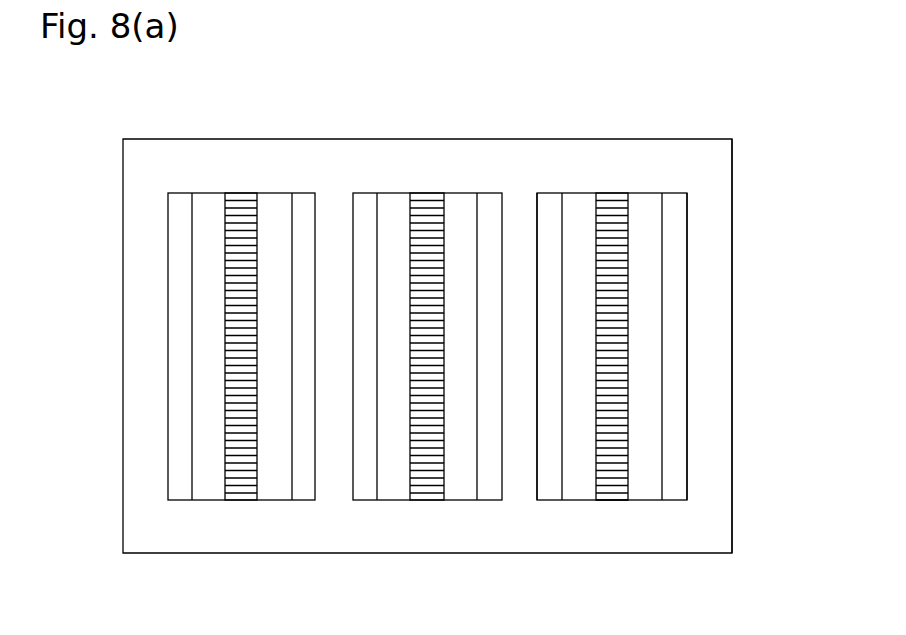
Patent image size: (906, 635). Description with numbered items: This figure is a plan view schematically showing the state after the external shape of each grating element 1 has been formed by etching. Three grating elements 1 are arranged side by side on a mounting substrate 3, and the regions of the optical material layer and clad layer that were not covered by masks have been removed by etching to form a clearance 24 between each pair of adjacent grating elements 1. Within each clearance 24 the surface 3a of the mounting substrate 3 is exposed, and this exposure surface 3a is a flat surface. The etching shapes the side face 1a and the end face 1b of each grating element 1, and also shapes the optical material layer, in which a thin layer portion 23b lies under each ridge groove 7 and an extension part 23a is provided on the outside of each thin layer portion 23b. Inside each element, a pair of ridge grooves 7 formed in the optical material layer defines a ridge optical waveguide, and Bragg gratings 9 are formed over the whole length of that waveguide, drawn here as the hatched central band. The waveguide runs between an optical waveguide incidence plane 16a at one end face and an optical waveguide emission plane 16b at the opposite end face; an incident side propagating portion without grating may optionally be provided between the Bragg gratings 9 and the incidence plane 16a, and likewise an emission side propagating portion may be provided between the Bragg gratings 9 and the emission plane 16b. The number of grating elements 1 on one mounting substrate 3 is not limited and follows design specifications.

The grating element 1 is at (638, 352).
The side face 1a is at (691, 222).
The end face 1b is at (580, 205).
The mounting substrate 3 is at (713, 358).
The surface of the mounting substrate 3a is at (713, 268).
The ridge groove 7 is at (207, 205).
The Bragg grating 9 is at (243, 203).
The optical waveguide incidence plane 16a is at (612, 205).
The optical waveguide emission plane 16b is at (610, 500).
The extension part 23a is at (190, 299).
The thin layer portion 23b is at (392, 205).
The clearance 24 is at (333, 209).